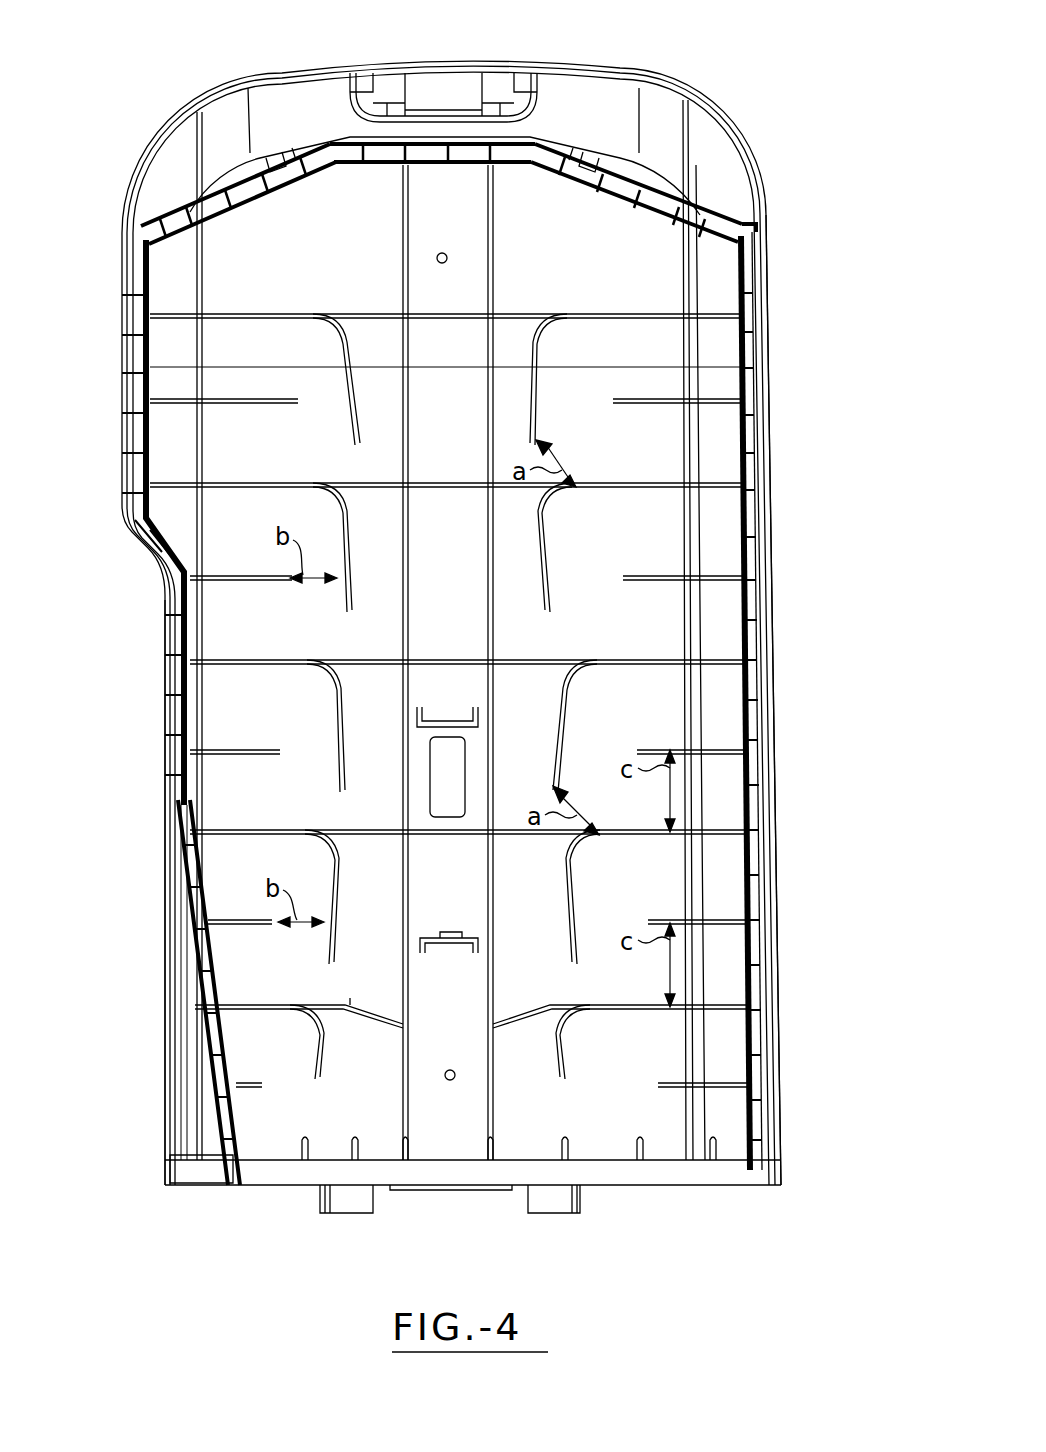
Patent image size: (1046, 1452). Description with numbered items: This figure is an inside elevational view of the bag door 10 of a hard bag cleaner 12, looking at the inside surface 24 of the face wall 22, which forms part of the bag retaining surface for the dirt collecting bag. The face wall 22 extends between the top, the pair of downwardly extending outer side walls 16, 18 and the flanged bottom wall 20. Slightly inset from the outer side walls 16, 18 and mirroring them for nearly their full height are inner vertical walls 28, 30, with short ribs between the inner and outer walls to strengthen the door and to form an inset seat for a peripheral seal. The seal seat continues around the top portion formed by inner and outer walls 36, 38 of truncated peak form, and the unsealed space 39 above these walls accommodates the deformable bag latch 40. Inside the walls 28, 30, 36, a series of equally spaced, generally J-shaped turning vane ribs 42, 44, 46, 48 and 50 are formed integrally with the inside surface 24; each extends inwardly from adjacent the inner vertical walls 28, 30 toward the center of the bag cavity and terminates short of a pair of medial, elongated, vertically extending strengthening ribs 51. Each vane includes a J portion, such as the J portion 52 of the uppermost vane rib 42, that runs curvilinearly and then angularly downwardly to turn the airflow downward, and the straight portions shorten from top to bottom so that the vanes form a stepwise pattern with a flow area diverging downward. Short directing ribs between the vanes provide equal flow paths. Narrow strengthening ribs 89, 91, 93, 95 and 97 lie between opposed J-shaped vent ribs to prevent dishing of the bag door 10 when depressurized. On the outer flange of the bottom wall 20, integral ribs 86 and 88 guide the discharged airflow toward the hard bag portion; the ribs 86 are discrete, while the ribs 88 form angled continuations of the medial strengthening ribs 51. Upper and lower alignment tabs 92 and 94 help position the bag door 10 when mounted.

The bag door 10 is at (760, 322).
The hard bag cleaner 12 is at (661, 70).
The outer side wall 16 is at (782, 640).
The outer side wall 18 is at (162, 628).
The flanged bottom wall 20 is at (598, 1152).
The face wall 22 is at (621, 457).
The inside surface 24 is at (653, 557).
The inner vertical wall 28 is at (760, 685).
The inner vertical wall 30 is at (183, 672).
The inner wall 36 is at (265, 197).
The outer wall 38 is at (710, 220).
The unsealed space 39 is at (278, 104).
The deformable latch 40 is at (432, 112).
The J-shaped turning vane rib 42 is at (272, 314).
The J-shaped turning vane rib 44 is at (278, 483).
The J-shaped turning vane rib 46 is at (278, 660).
The J-shaped turning vane rib 48 is at (272, 830).
The J-shaped turning vane rib 50 is at (278, 1005).
The medial strengthening rib 51 is at (403, 872).
The J portion 52 is at (572, 318).
The integral rib 86 is at (355, 1140).
The integral rib 88 is at (405, 1142).
The narrow strengthening rib 89 is at (378, 314).
The narrow strengthening rib 91 is at (348, 483).
The upper alignment tab 92 is at (291, 152).
The narrow strengthening rib 93 is at (352, 660).
The lower alignment tab 94 is at (333, 1212).
The narrow strengthening rib 95 is at (343, 830).
The narrow strengthening rib 97 is at (350, 1005).